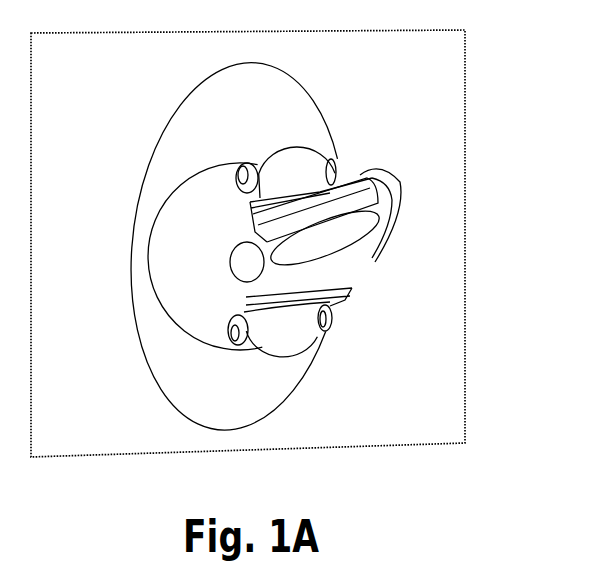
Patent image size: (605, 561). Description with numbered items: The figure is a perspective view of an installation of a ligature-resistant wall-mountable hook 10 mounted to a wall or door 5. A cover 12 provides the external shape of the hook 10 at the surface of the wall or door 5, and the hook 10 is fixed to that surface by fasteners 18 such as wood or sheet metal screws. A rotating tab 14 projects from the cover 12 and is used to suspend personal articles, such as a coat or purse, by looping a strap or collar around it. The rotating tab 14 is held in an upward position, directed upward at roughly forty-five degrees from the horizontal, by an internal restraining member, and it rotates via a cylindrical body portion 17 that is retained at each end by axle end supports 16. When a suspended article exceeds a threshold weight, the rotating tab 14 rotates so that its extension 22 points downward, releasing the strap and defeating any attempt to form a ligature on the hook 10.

The wall or door 5 is at (448, 432).
The ligature-resistant wall-mountable hook 10 is at (497, 79).
The cover 12 is at (323, 118).
The rotating tab 14 is at (402, 178).
The axle end supports 16 is at (375, 248).
The cylindrical body portion 17 is at (363, 263).
The fasteners 18 is at (334, 320).
The extension 22 is at (339, 252).